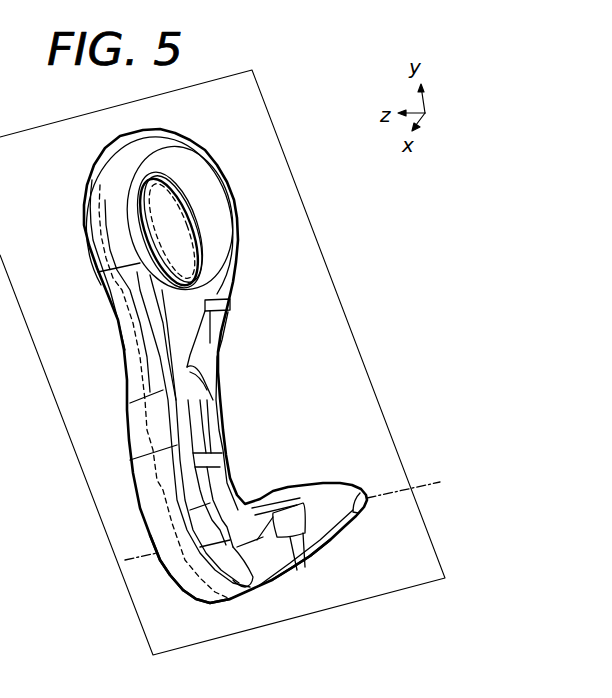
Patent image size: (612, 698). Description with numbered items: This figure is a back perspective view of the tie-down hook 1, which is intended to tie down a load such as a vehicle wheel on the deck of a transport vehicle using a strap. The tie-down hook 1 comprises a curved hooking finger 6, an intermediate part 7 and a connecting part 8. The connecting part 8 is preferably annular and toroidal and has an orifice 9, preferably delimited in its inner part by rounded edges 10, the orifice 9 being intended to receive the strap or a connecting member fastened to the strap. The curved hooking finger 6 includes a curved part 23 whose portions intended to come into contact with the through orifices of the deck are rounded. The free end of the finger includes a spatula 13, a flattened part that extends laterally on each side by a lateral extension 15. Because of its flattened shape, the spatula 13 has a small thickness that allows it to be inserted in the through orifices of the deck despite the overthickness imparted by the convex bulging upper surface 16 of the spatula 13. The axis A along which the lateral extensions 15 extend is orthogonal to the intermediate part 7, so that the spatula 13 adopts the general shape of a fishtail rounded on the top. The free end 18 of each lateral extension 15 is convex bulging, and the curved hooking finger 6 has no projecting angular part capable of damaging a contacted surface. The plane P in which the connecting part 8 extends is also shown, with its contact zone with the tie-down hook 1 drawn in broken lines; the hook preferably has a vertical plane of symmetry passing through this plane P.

The tie-down hook 1 is at (302, 372).
The curved hooking finger 6 is at (164, 613).
The intermediate part 7 is at (105, 435).
The connecting part 8 is at (265, 222).
The orifice 9 is at (168, 236).
The rounded edges 10 is at (213, 253).
The spatula 13 is at (345, 556).
The lateral extension 15 is at (327, 471).
The convex bulging upper surface 16 is at (275, 498).
The free end 18 is at (367, 501).
The curved part 23 is at (154, 577).
The axis A is at (413, 486).
The plane P is at (27, 195).